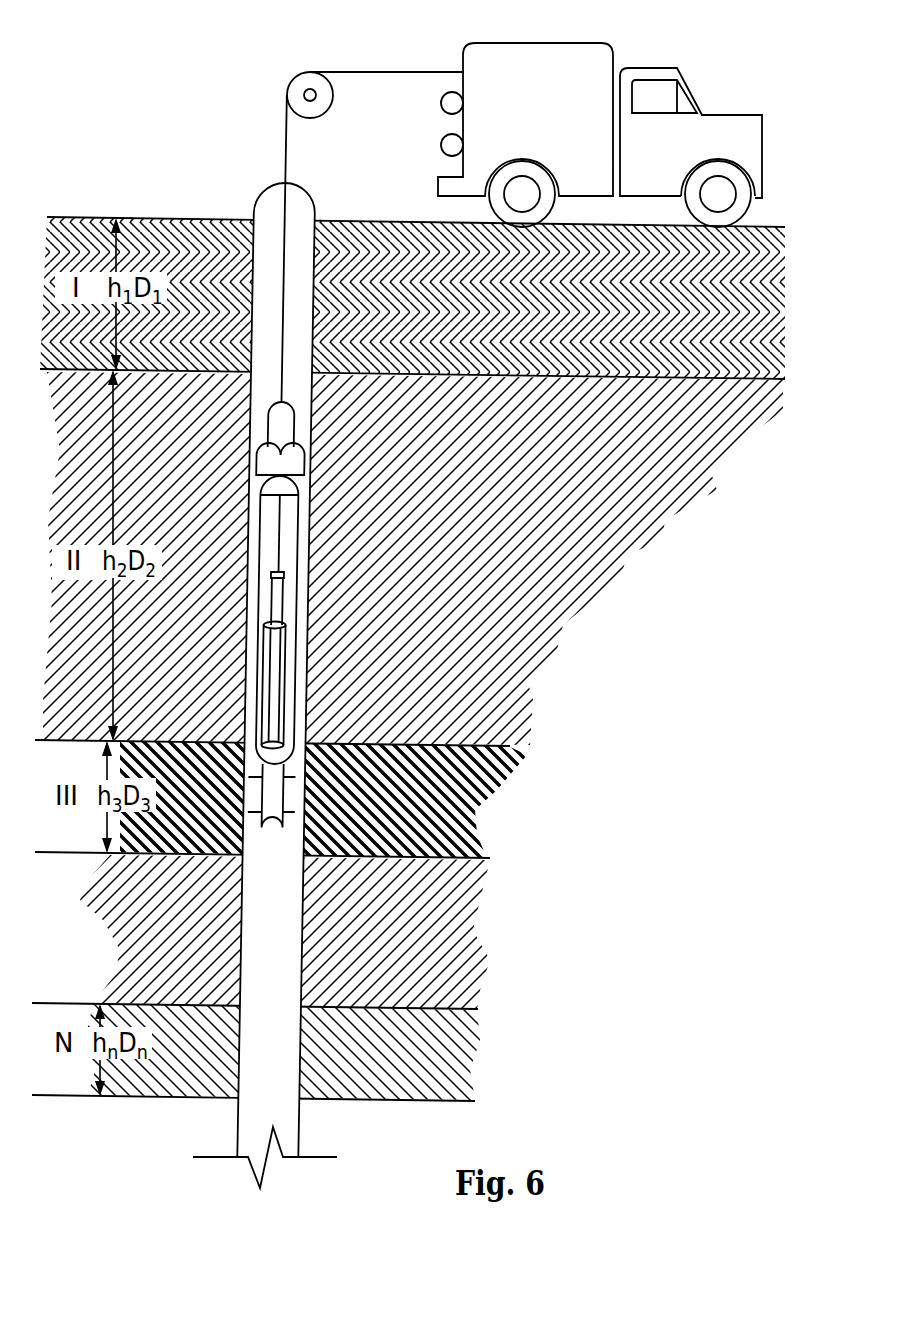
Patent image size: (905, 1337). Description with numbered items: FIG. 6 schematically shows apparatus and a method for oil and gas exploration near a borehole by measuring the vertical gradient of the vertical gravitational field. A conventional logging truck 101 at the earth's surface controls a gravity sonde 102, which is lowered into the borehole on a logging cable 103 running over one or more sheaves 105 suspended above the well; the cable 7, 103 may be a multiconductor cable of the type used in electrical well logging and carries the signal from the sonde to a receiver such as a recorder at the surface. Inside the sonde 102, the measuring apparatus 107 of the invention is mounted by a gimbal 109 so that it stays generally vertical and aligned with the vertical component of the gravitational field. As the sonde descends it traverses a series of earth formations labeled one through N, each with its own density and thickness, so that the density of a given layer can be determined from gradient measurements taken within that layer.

The wireline cable 7 is at (396, 70).
The logging truck 101 is at (550, 43).
The gravity sonde 102 is at (285, 630).
The logging cable 103 is at (284, 295).
The sheave 105 is at (293, 79).
The apparatus 107 is at (284, 588).
The gimbal 109 is at (295, 708).